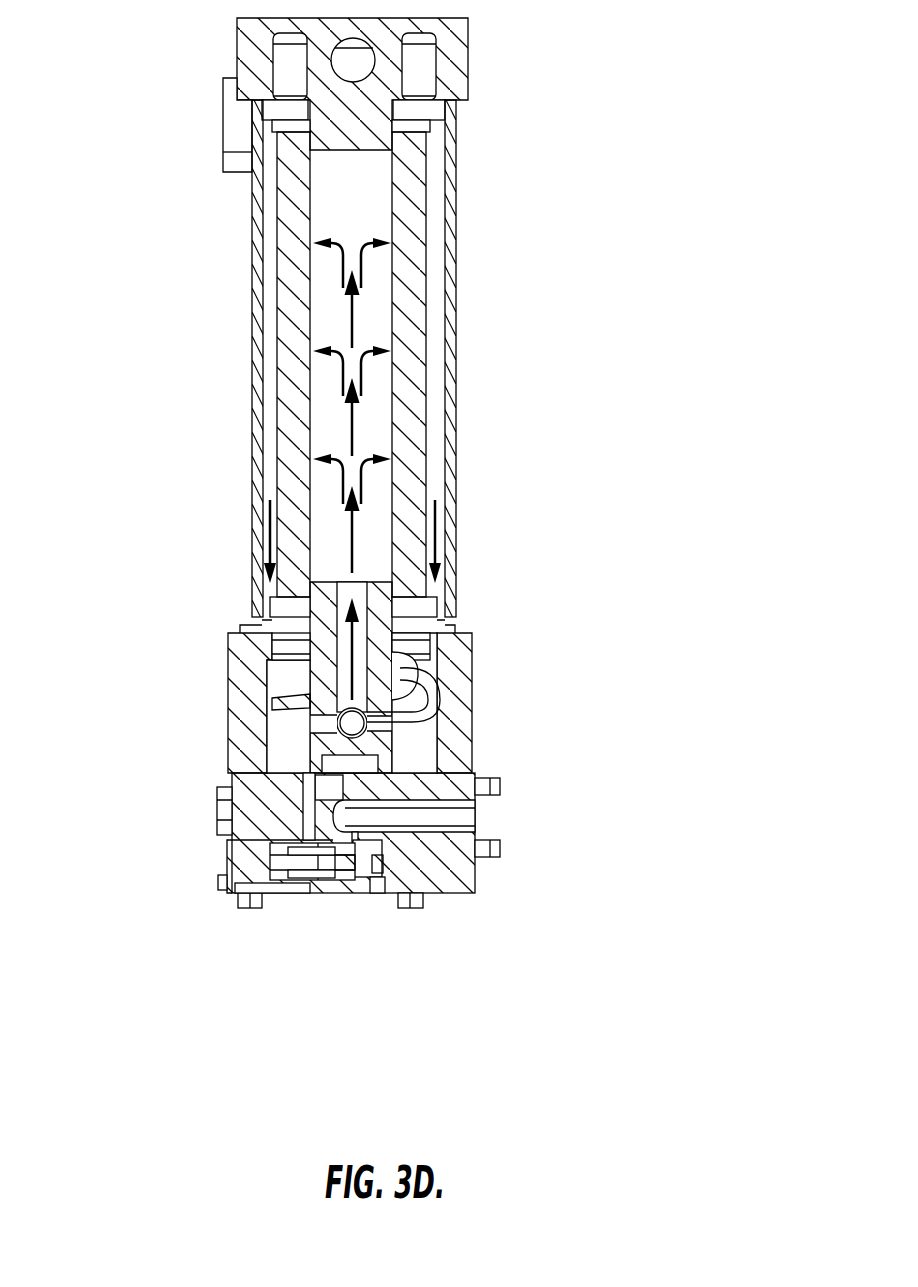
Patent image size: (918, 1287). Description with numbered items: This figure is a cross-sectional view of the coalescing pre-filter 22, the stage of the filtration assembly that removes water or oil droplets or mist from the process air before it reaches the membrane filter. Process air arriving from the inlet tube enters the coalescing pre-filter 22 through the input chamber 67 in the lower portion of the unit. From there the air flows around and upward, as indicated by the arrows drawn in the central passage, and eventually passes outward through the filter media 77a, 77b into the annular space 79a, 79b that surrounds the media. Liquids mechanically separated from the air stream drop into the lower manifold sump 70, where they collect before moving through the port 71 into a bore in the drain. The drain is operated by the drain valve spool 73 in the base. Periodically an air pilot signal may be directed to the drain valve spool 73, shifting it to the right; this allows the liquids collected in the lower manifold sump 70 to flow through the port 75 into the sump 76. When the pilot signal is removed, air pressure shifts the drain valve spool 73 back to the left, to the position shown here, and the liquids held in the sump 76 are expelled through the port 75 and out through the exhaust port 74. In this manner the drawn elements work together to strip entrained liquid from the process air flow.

The coalescing pre-filter 22 is at (640, 68).
The filter media 77a is at (410, 262).
The filter media 77b is at (300, 247).
The annular space 79a is at (433, 387).
The annular space 79b is at (268, 402).
The input chamber 67 is at (410, 664).
The lower manifold sump 70 is at (287, 761).
The port 71 is at (290, 825).
The drain valve spool 73 is at (317, 882).
The exhaust port 74 is at (380, 897).
The port 75 is at (368, 840).
The sump 76 is at (412, 808).